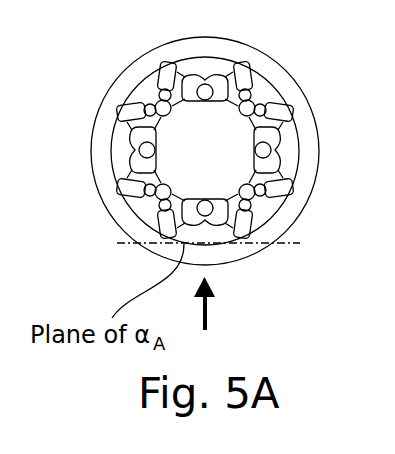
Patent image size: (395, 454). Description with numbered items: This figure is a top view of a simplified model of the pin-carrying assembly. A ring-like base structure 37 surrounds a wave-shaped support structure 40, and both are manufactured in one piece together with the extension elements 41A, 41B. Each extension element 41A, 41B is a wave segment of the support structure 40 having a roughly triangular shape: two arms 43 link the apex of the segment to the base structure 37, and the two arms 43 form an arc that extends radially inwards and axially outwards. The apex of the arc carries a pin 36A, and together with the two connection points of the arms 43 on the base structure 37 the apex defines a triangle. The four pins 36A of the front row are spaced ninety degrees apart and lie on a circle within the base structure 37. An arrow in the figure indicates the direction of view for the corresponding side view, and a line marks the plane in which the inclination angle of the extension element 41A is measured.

The ring-like base structure 37 is at (307, 100).
The wave-shaped support structure 40 is at (133, 190).
The extension element 41A is at (216, 108).
The extension element 41B is at (152, 103).
The pin 36A is at (205, 209).
The arm 43 is at (253, 213).